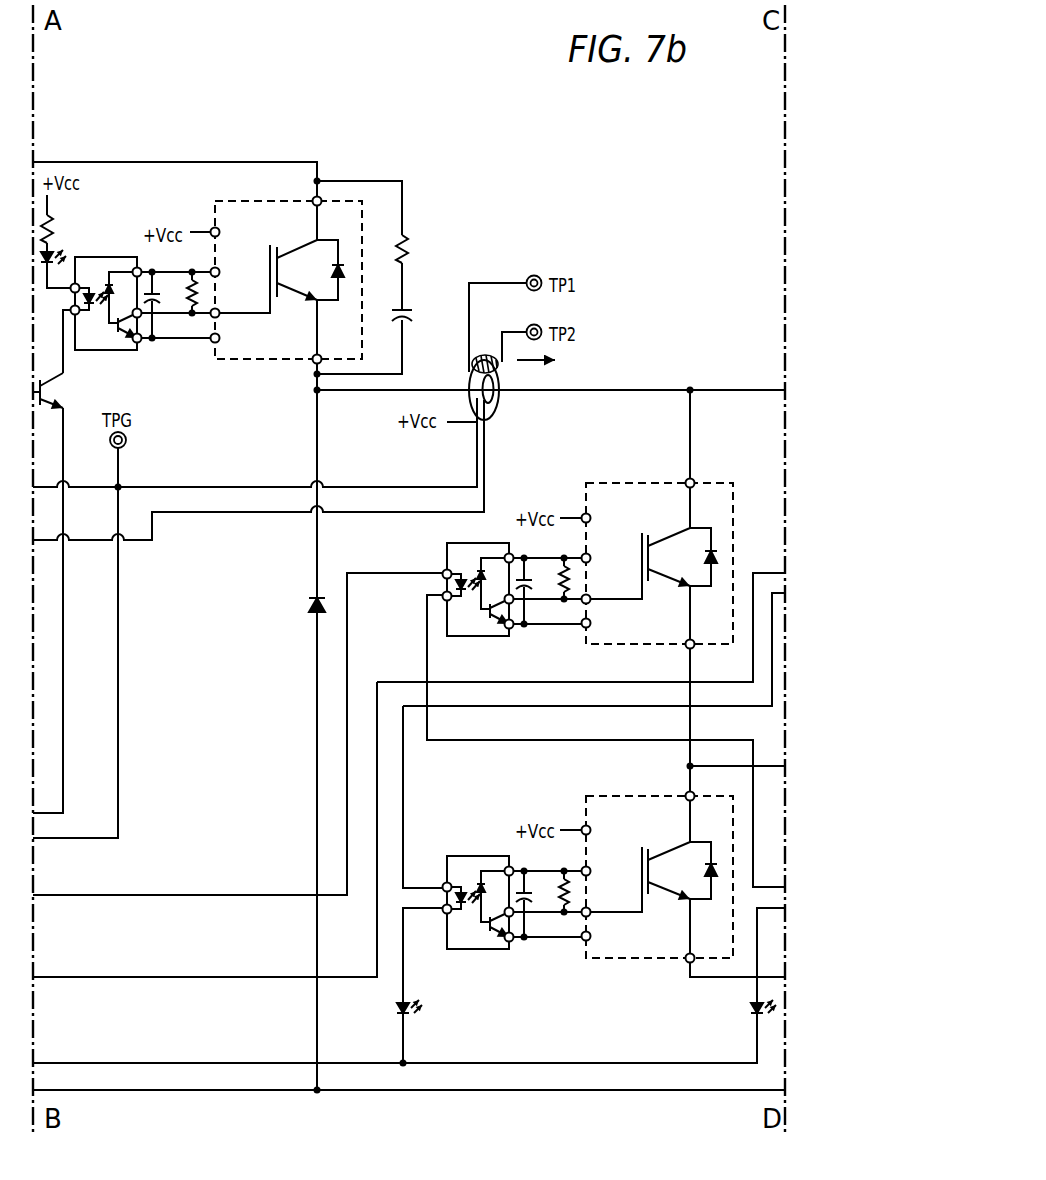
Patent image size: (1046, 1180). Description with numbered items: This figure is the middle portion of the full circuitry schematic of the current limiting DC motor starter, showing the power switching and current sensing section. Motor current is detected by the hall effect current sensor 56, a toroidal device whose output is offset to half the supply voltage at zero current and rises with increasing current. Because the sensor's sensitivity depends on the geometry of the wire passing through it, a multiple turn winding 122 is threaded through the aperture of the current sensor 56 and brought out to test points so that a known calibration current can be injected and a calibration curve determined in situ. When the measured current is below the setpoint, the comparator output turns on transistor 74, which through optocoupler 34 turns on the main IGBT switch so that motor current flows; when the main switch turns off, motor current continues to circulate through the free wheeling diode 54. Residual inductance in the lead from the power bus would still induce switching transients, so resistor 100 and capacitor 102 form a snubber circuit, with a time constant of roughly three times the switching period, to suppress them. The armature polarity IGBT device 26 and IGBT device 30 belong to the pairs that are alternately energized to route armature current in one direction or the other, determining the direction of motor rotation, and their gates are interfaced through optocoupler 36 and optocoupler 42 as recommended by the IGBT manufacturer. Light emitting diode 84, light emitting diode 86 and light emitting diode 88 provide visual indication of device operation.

The IGBT device 26 is at (717, 497).
The IGBT device 30 is at (643, 948).
The optocoupler 34 is at (96, 266).
The optocoupler 36 is at (458, 560).
The optocoupler 42 is at (462, 878).
The free wheeling diode 54 is at (303, 606).
The hall effect current sensor 56 is at (490, 410).
The transistor 74 is at (60, 388).
The light emitting diode 84 is at (58, 250).
The light emitting diode 86 is at (398, 1014).
The light emitting diode 88 is at (751, 1014).
The resistor 100 is at (408, 240).
The capacitor 102 is at (417, 314).
The multiple turn winding 122 is at (483, 356).